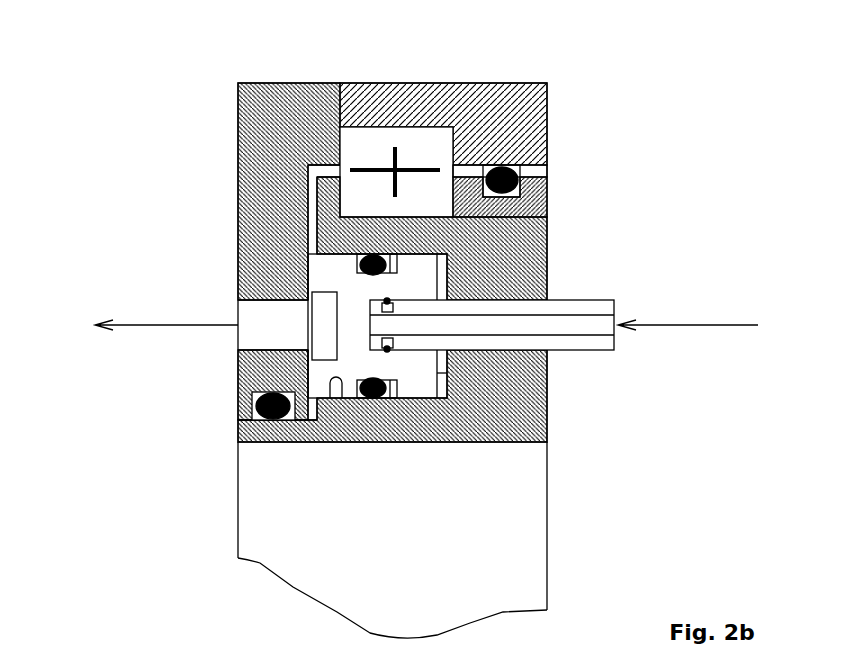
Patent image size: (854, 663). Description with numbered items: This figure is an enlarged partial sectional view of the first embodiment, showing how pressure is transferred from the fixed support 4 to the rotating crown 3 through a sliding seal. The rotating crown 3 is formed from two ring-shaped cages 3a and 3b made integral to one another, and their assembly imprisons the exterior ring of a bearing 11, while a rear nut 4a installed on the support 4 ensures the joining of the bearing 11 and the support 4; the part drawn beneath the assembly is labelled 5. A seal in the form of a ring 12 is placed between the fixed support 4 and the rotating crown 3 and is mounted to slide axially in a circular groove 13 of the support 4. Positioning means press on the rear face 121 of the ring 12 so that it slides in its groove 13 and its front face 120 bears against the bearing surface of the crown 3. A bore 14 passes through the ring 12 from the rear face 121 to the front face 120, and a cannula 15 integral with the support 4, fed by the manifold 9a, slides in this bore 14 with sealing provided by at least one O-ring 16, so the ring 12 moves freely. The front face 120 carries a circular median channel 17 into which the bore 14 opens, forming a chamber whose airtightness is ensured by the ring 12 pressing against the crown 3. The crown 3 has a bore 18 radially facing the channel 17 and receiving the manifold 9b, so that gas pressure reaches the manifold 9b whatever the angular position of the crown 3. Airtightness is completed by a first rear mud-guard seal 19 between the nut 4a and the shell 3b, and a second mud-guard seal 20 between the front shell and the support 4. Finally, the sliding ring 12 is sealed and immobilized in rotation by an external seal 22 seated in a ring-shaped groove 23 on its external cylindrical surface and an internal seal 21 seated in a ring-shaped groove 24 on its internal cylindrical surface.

The rotating crown 3 is at (120, 105).
The ring-shaped cage 3a is at (262, 95).
The ring-shaped cage 3b is at (500, 92).
The fixed support 4 is at (533, 412).
The rear nut 4a is at (547, 203).
The wall 5 is at (94, 434).
The manifold 9a is at (737, 325).
The manifold 9b is at (138, 325).
The bearing 11 is at (413, 143).
The seal ring 12 is at (420, 390).
The circular groove 13 is at (340, 399).
The bore 14 is at (388, 326).
The cannula 15 is at (572, 303).
The O-ring 16 is at (388, 300).
The circular median channel 17 is at (324, 326).
The bore 18 is at (253, 340).
The rear mud-guard seal 19 is at (515, 168).
The mud-guard seal 20 is at (285, 417).
The internal seal 21 is at (368, 397).
The external seal 22 is at (363, 253).
The ring-shaped groove 23 is at (390, 253).
The ring-shaped groove 24 is at (390, 398).
The front face 120 is at (308, 282).
The rear face 121 is at (448, 373).